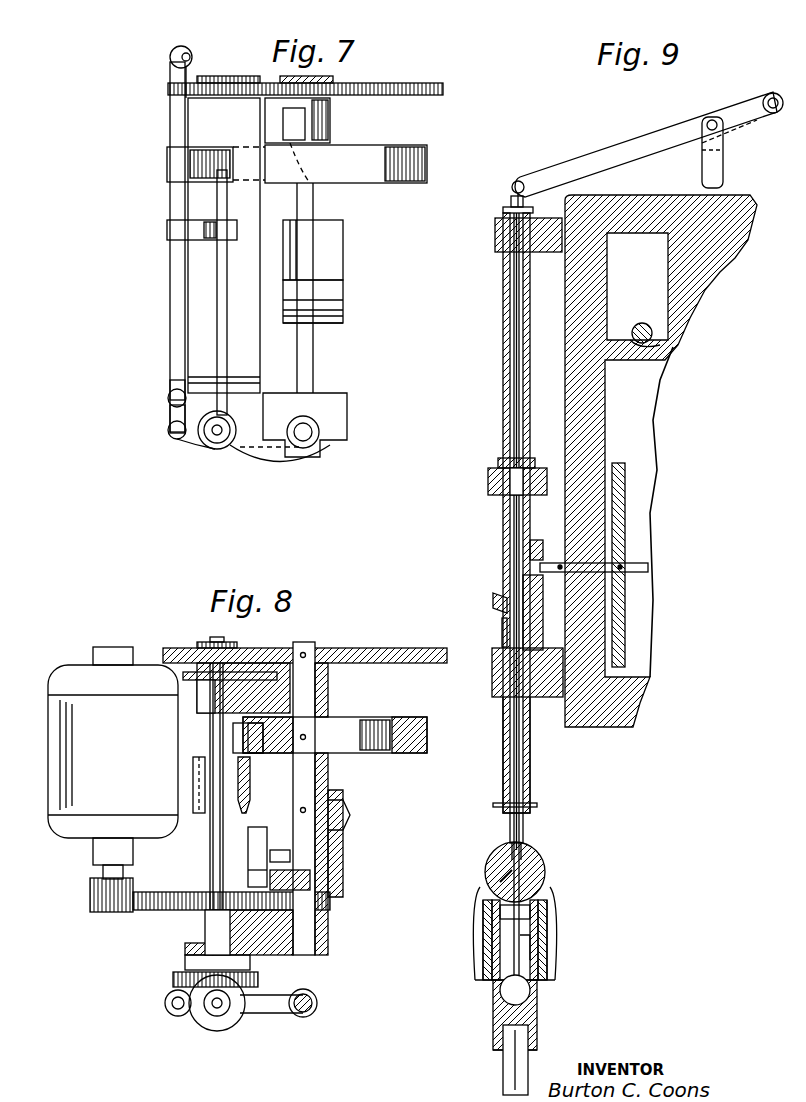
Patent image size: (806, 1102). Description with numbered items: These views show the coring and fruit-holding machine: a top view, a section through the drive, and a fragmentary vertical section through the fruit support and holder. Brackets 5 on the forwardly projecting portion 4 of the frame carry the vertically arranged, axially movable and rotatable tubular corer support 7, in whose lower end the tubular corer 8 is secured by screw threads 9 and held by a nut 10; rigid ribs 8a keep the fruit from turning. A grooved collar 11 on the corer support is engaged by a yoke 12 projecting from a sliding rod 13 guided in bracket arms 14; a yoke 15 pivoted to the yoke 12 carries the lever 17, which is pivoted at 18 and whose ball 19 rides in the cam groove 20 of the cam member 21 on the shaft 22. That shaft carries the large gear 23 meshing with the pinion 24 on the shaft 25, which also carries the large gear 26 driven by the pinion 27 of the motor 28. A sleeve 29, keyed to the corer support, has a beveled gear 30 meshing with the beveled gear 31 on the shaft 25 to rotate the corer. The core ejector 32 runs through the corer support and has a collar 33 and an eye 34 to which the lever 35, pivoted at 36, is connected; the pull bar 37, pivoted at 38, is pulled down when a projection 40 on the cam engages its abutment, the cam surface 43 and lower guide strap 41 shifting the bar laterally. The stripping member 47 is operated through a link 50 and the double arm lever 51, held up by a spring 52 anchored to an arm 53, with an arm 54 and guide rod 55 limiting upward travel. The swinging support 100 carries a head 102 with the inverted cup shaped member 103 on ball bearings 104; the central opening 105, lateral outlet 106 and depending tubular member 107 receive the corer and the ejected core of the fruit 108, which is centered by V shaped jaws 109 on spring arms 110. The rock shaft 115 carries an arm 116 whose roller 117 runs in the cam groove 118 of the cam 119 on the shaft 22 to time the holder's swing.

In FIG. 9, the forwardly projecting portion 4 is at (612, 720).
In FIG. 9, the bracket 5 is at (503, 268).
In FIG. 8, the tubular corer support 7 is at (200, 1012).
In FIG. 9, the tubular corer support 7 is at (503, 395).
In FIG. 9, the tubular corer 8 is at (522, 838).
In FIG. 9, the rigid ribs 8a is at (492, 878).
In FIG. 9, the screw threads 9 is at (503, 790).
In FIG. 9, the nut 10 is at (525, 800).
In FIG. 8, the grooved collar 11 is at (225, 1030).
In FIG. 9, the grooved collar 11 is at (490, 496).
In FIG. 8, the yoke 12 is at (275, 1012).
In FIG. 9, the yoke 12 is at (490, 480).
In FIG. 8, the sliding rod 13 is at (317, 1005).
In FIG. 7, the bracket arms 14 is at (265, 460).
In FIG. 7, the yoke 15 is at (315, 457).
In FIG. 7, the lever 17 is at (313, 365).
In FIG. 7, the pivot 18 is at (343, 316).
In FIG. 7, the ball 19 is at (313, 183).
In FIG. 8, the cam groove 20 is at (400, 753).
In FIG. 9, the cam groove 20 is at (625, 508).
In FIG. 7, the cam member 21 is at (346, 164).
In FIG. 8, the cam member 21 is at (360, 717).
In FIG. 8, the shaft 22 is at (312, 645).
In FIG. 7, the large gear 23 is at (405, 82).
In FIG. 8, the large gear 23 is at (370, 648).
In FIG. 7, the pinion 24 is at (228, 76).
In FIG. 8, the pinion 24 is at (190, 648).
In FIG. 8, the shaft 25 is at (220, 642).
In FIG. 9, the shaft 25 is at (648, 567).
In FIG. 8, the large gear 26 is at (165, 910).
In FIG. 9, the large gear 26 is at (618, 565).
In FIG. 8, the pinion 27 is at (95, 885).
In FIG. 8, the motor 28 is at (62, 755).
In FIG. 9, the sleeve 29 is at (500, 625).
In FIG. 9, the beveled gear 30 is at (493, 598).
In FIG. 8, the beveled gear 31 is at (180, 975).
In FIG. 9, the beveled gear 31 is at (530, 548).
In FIG. 8, the core ejector 32 is at (214, 1012).
In FIG. 9, the core ejector 32 is at (535, 850).
In FIG. 7, the collar 33 is at (212, 442).
In FIG. 9, the collar 33 is at (508, 205).
In FIG. 7, the eye 34 is at (225, 445).
In FIG. 9, the eye 34 is at (513, 180).
In FIG. 7, the lever 35 is at (215, 317).
In FIG. 9, the lever 35 is at (578, 160).
In FIG. 7, the pivot 36 is at (195, 182).
In FIG. 9, the pivot 36 is at (773, 93).
In FIG. 7, the pull bar 37 is at (228, 240).
In FIG. 8, the pull bar 37 is at (250, 778).
In FIG. 9, the pull bar 37 is at (705, 175).
In FIG. 7, the pivot 38 is at (205, 240).
In FIG. 9, the pivot 38 is at (710, 118).
In FIG. 8, the projection 40 is at (250, 757).
In FIG. 7, the lower guide strap 41 is at (200, 355).
In FIG. 8, the lower guide strap 41 is at (290, 955).
In FIG. 7, the cam surface 43 is at (303, 442).
In FIG. 9, the stripping member 47 is at (508, 810).
In FIG. 7, the link 50 is at (177, 440).
In FIG. 7, the double arm lever 51 is at (175, 378).
In FIG. 7, the spring 52 is at (192, 50).
In FIG. 8, the spring 52 is at (195, 770).
In FIG. 7, the arm 53 is at (193, 70).
In FIG. 7, the arm 54 is at (170, 412).
In FIG. 7, the guide rod 55 is at (168, 396).
In FIG. 9, the swinging support 100 is at (505, 1075).
In FIG. 9, the head 102 is at (475, 1028).
In FIG. 9, the inverted cup shaped member 103 is at (545, 940).
In FIG. 9, the ball bearings 104 is at (492, 912).
In FIG. 9, the central opening 105 is at (495, 985).
In FIG. 9, the lateral outlet 106 is at (530, 990).
In FIG. 9, the depending tubular member 107 is at (540, 945).
In FIG. 9, the fruit 108 is at (545, 866).
In FIG. 9, the V shaped jaws 109 is at (545, 888).
In FIG. 9, the spring arms 110 is at (475, 930).
In FIG. 8, the rock shaft 115 is at (250, 827).
In FIG. 8, the arm 116 is at (290, 855).
In FIG. 8, the roller 117 is at (310, 878).
In FIG. 7, the cam groove 118 is at (343, 285).
In FIG. 8, the cam groove 118 is at (343, 820).
In FIG. 7, the cam 119 is at (320, 250).
In FIG. 8, the cam 119 is at (343, 838).